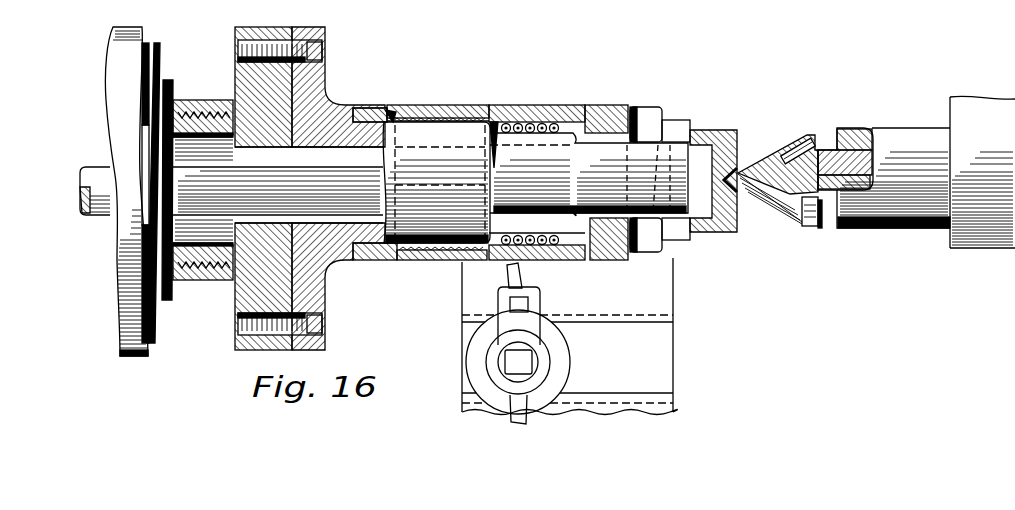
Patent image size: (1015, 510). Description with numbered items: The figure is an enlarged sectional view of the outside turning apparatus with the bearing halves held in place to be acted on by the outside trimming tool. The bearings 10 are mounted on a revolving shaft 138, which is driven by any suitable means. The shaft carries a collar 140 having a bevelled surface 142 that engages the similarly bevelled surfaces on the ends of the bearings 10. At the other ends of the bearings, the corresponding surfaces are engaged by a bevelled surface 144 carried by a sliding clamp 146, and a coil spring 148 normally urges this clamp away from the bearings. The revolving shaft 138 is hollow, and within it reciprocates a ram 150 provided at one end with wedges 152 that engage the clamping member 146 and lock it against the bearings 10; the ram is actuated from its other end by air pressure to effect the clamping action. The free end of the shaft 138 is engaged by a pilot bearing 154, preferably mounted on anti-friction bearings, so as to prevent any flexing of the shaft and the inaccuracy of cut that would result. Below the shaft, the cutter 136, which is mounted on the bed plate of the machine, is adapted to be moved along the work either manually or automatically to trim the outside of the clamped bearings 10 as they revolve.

The bearings 10 is at (463, 107).
The cutter 136 is at (522, 278).
The revolving shaft 138 is at (328, 100).
The collar 140 is at (374, 116).
The bevelled surface 142 is at (412, 104).
The bevelled surface 144 is at (490, 110).
The sliding clamp 146 is at (608, 115).
The coil spring 148 is at (548, 123).
The ram 150 is at (212, 212).
The wedges 152 is at (650, 118).
The pilot bearing 154 is at (779, 152).